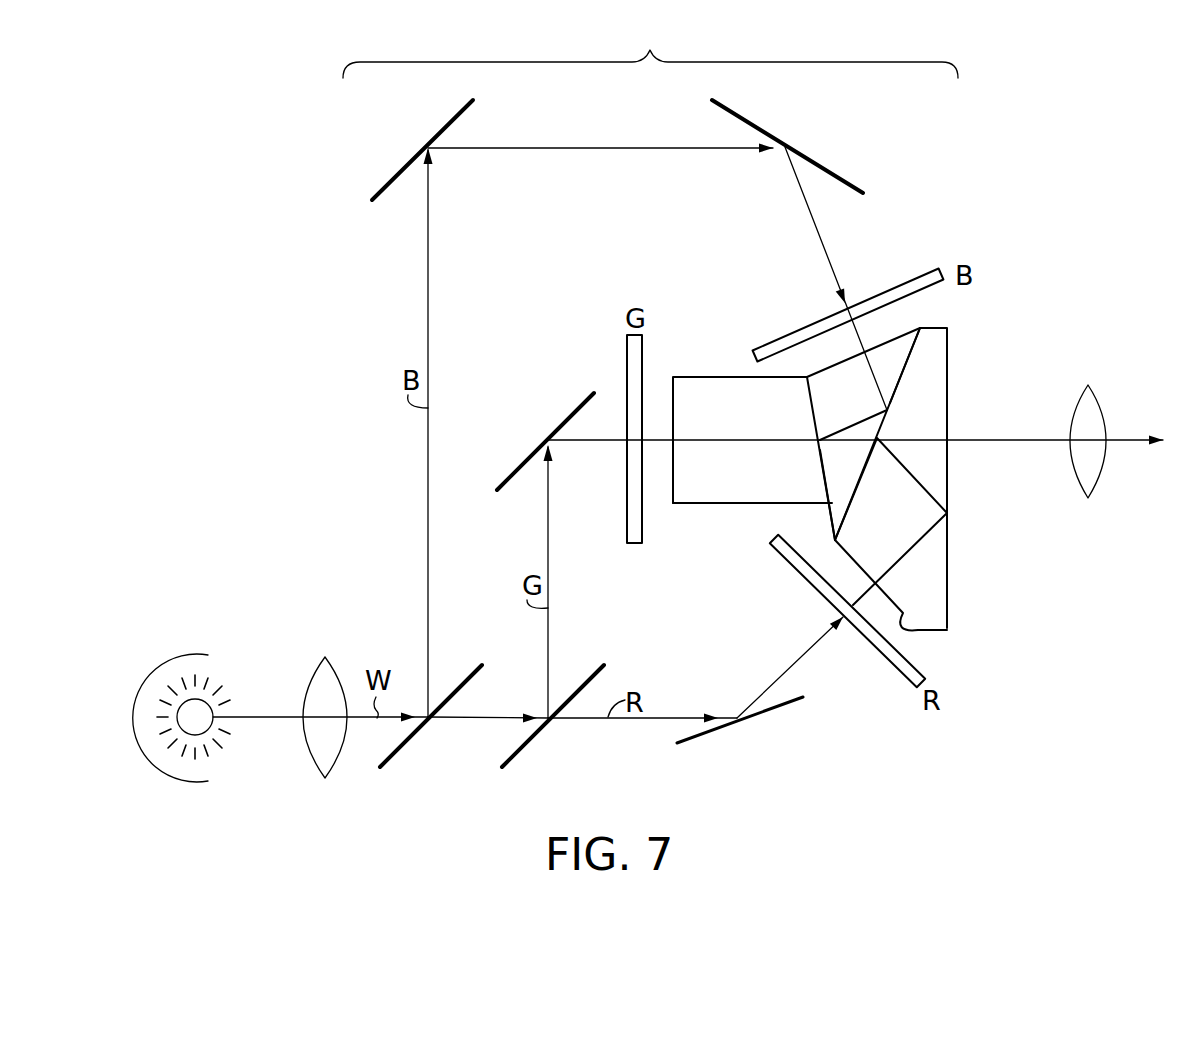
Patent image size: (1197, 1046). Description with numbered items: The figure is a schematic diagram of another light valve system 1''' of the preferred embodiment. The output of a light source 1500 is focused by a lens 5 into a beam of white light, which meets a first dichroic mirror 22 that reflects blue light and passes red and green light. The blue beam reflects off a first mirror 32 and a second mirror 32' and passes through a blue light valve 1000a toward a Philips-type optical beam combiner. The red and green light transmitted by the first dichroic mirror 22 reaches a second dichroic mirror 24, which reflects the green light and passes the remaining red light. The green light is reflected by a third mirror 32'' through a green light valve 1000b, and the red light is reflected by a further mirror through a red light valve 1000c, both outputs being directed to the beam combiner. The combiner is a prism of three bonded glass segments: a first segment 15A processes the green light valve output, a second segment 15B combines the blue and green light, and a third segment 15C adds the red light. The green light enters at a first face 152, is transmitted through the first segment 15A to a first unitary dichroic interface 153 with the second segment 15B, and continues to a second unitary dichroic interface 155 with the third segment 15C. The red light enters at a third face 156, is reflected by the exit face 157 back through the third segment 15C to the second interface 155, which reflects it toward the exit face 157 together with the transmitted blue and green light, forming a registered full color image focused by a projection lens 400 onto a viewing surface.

The light valve system 1''' is at (650, 47).
The light source 1500 is at (180, 641).
The lens 5 is at (313, 760).
The first dichroic mirror 22 is at (398, 753).
The second dichroic mirror 24 is at (522, 753).
The first mirror 32 is at (405, 150).
The second mirror 32' is at (806, 146).
The third mirror 32'' is at (740, 744).
The blue light valve 1000a is at (922, 270).
The green light valve 1000b is at (627, 353).
The red light valve 1000c is at (897, 663).
The first segment 15A is at (749, 414).
The second segment 15B is at (847, 458).
The third segment 15C is at (910, 528).
The first face 152 is at (673, 490).
The first unitary dichroic interface 153 is at (820, 472).
The second unitary dichroic interface 155 is at (910, 366).
The third face 156 is at (898, 617).
The exit face 157 is at (947, 483).
The projection lens 400 is at (1085, 473).